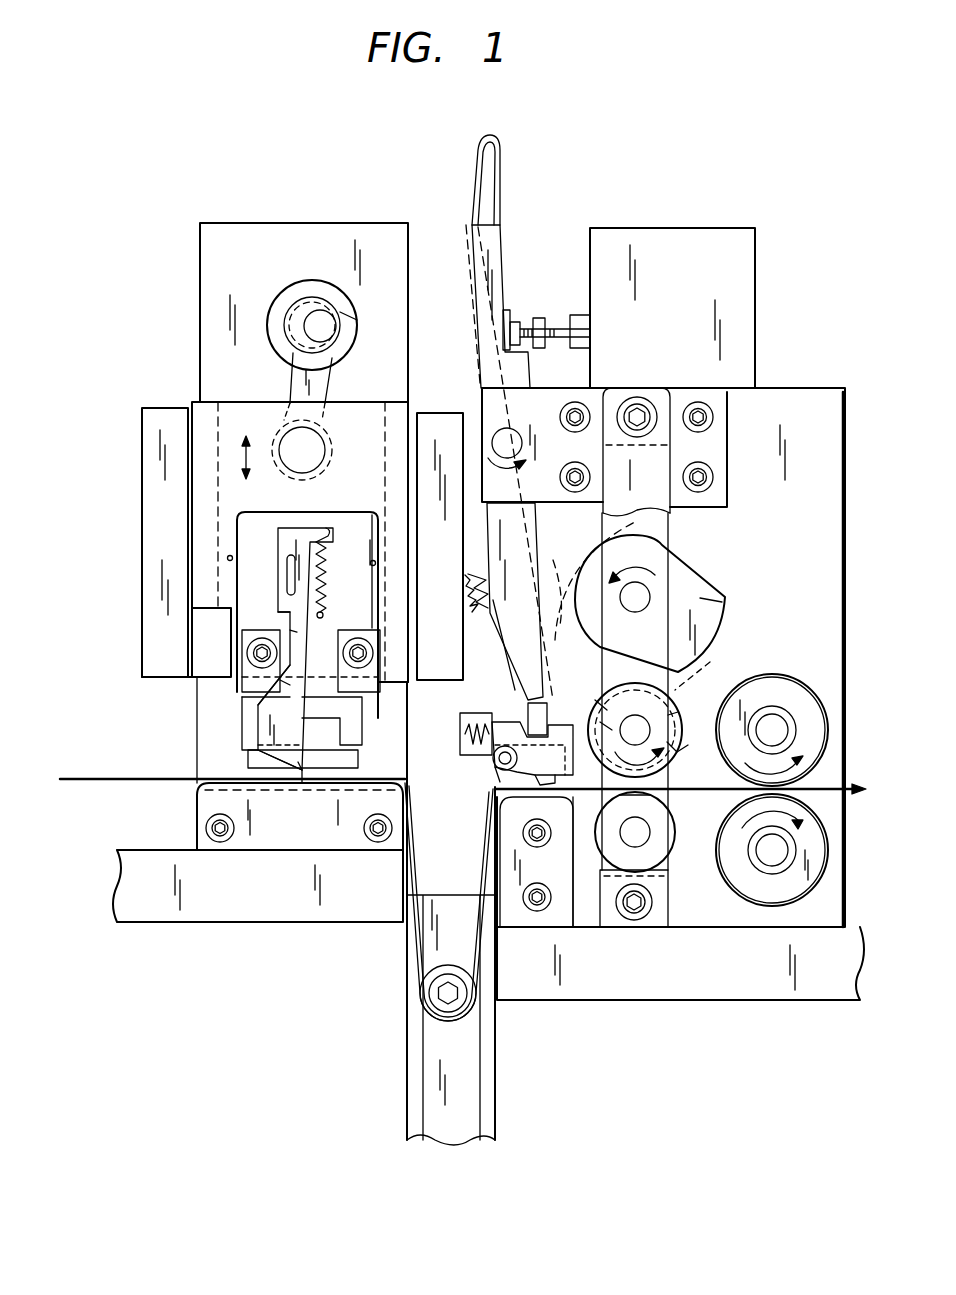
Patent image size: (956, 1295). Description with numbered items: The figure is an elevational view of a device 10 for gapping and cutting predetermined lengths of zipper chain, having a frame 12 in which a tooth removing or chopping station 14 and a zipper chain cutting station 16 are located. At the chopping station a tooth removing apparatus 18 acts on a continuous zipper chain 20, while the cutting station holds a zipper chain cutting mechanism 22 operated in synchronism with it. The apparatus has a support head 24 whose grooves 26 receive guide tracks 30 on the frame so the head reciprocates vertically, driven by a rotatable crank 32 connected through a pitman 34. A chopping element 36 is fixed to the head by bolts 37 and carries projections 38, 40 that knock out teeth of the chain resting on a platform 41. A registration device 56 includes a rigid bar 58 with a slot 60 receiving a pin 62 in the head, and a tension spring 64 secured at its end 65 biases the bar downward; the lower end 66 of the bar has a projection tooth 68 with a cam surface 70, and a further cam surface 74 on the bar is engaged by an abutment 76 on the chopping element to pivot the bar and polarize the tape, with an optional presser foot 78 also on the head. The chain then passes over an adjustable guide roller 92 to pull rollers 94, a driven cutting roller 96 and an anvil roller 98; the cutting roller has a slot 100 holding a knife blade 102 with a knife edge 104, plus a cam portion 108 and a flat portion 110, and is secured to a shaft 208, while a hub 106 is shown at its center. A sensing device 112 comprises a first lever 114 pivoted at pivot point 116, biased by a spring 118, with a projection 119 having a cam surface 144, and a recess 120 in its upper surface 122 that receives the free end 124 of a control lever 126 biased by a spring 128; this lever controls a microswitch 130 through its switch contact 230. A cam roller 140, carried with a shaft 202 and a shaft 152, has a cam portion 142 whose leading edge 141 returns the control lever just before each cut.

The device 10 is at (128, 158).
The frame 12 is at (138, 928).
The tooth removing or chopping station 14 is at (358, 210).
The zipper chain cutting station 16 is at (692, 214).
The tooth removing apparatus 18 is at (113, 500).
The zipper chain 20 is at (126, 757).
The zipper chain cutting mechanism 22 is at (805, 567).
The support head 24 is at (205, 405).
The grooves 26 is at (393, 402).
The guide tracks 30 is at (175, 410).
The crank 32 is at (268, 312).
The pitman 34 is at (345, 314).
The tooth removing or chopping element 36 is at (243, 738).
The bolts 37 is at (244, 645).
The projection 38 is at (243, 750).
The projection 40 is at (354, 740).
The platform 41 is at (200, 800).
The registration device 56 is at (245, 565).
The elongated rigid bar 58 is at (295, 628).
The slot 60 is at (286, 585).
The pin 62 is at (297, 535).
The tension spring 64 is at (326, 562).
The spring end 65 is at (323, 613).
The lower end of bar 66 is at (305, 722).
The projection tooth 68 is at (340, 760).
The cam surface 70 is at (302, 772).
The cam surface 74 is at (252, 713).
The abutment 76 is at (285, 683).
The presser foot 78 is at (303, 768).
The adjustable guide roller 92 is at (476, 1000).
The pull rollers 94 is at (830, 690).
The cutting roller 96 is at (660, 715).
The anvil roller 98 is at (675, 850).
The slot 100 is at (722, 678).
The knife blade 102 is at (742, 680).
The knife edge 104 is at (678, 762).
The hub 106 is at (638, 716).
The cam portion 108 is at (665, 795).
The flat portion 110 is at (600, 700).
The sensing device 112 is at (468, 812).
The first lever 114 is at (493, 762).
The pivot point 116 is at (493, 778).
The spring 118 is at (462, 728).
The projection 119 is at (570, 830).
The recess 120 is at (534, 753).
The upper surface 122 is at (605, 720).
The free end 124 is at (528, 712).
The control lever 126 is at (477, 335).
The spring 128 is at (475, 575).
The microswitch 130 is at (750, 228).
The cam roller 140 is at (655, 547).
The leading edge 141 is at (710, 562).
The cam portion 142 is at (700, 605).
The cam surface 144 is at (480, 820).
The shaft 152 is at (322, 316).
The shaft 202 is at (650, 597).
The shaft 208 is at (705, 665).
The switch contact 230 is at (575, 320).